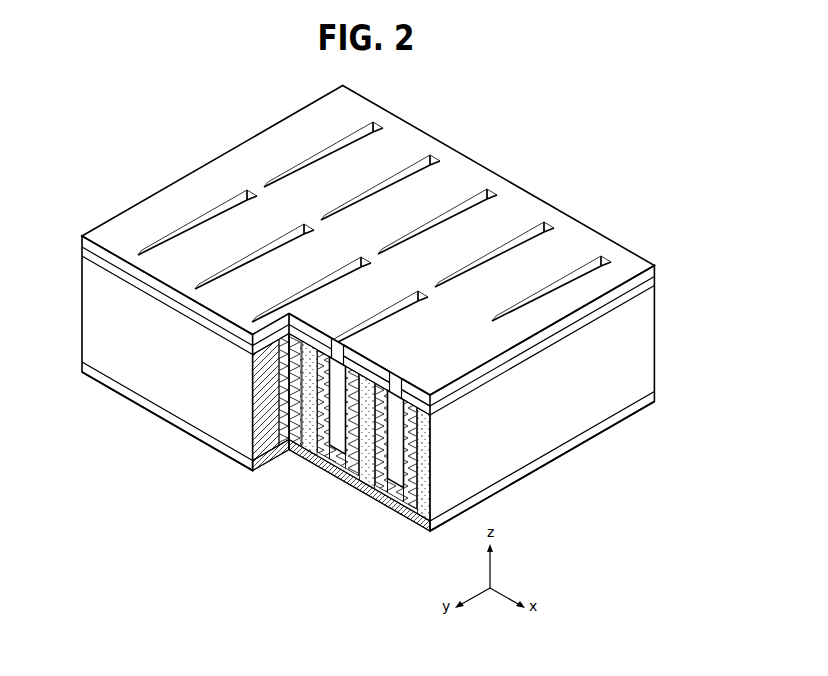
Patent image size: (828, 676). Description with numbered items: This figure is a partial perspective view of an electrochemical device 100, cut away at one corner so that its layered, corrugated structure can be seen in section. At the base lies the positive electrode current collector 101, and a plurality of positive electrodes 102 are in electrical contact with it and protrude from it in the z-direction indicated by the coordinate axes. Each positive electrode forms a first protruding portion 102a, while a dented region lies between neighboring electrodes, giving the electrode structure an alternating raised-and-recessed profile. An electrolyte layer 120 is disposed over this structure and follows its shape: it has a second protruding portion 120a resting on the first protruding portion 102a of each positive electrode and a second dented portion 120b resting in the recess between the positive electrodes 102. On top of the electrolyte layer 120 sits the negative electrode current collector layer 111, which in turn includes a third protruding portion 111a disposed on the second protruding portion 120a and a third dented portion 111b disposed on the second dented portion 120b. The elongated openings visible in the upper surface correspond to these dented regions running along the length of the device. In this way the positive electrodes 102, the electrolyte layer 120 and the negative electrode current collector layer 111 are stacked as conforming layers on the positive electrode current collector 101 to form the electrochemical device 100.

The electrochemical device 100 is at (562, 110).
The positive electrode current collector 101 is at (510, 478).
The positive electrodes 102 is at (556, 432).
The first protruding portion 102a is at (288, 440).
The negative electrode current collector layer 111 is at (628, 263).
The third protruding portion 111a is at (370, 375).
The third dented portion 111b is at (393, 496).
The electrolyte layer 120 is at (570, 330).
The second protruding portion 120a is at (306, 436).
The second dented portion 120b is at (355, 372).